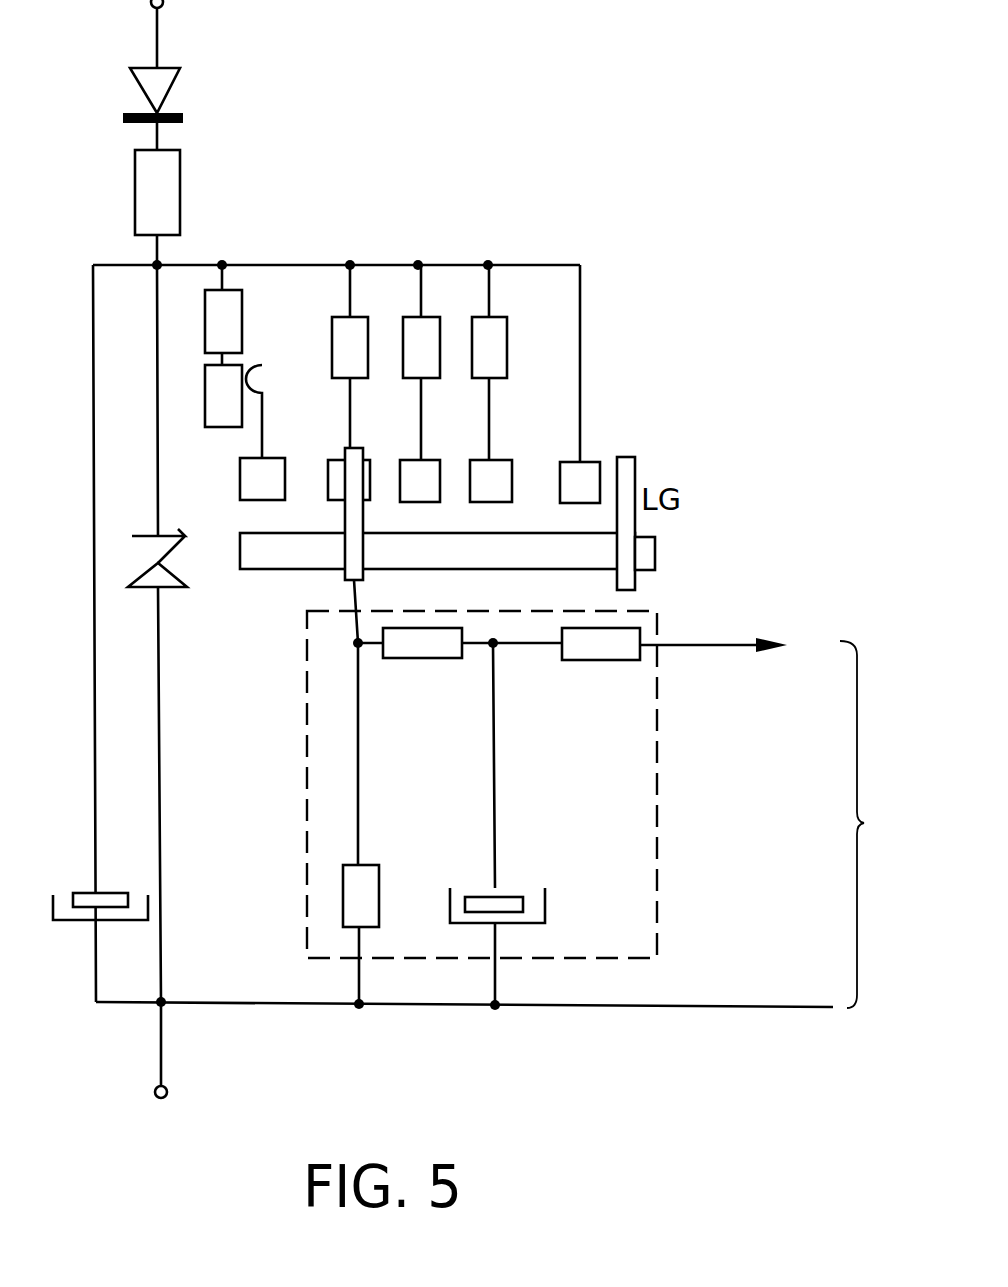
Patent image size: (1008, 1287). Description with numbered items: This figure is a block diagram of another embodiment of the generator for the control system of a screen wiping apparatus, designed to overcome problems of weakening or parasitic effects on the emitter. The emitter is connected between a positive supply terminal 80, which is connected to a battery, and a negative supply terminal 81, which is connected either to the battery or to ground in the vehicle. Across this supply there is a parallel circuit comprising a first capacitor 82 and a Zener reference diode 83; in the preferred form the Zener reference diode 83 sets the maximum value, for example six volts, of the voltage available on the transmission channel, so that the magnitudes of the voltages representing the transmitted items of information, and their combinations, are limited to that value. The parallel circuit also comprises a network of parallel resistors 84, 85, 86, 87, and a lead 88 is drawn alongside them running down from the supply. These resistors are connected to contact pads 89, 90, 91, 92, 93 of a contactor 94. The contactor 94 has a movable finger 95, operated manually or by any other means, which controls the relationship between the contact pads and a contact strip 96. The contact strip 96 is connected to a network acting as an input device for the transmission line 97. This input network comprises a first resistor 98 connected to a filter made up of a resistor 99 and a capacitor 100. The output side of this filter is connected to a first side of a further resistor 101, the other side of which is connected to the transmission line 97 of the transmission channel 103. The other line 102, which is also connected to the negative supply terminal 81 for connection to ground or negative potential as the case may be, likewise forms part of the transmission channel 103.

The positive supply terminal 80 is at (163, 6).
The negative supply terminal 81 is at (168, 1090).
The first capacitor 82 is at (88, 893).
The Zener reference diode 83 is at (205, 523).
The parallel resistor 84 is at (243, 318).
The parallel resistor 85 is at (388, 298).
The parallel resistor 86 is at (462, 298).
The parallel resistor 87 is at (508, 320).
The lead wire 88 is at (580, 320).
The contact pad 89 is at (240, 460).
The contact pad 90 is at (328, 466).
The contact pad 91 is at (412, 460).
The contact pad 92 is at (470, 466).
The contact pad 93 is at (560, 468).
The contactor 94 is at (662, 564).
The movable finger 95 is at (345, 514).
The contact strip 96 is at (475, 562).
The transmission line 97 is at (720, 648).
The first resistor 98 is at (380, 872).
The resistor 99 is at (418, 660).
The capacitor 100 is at (510, 897).
The further resistor 101 is at (580, 652).
The other line 102 is at (707, 1006).
The transmission channel 103 is at (881, 824).